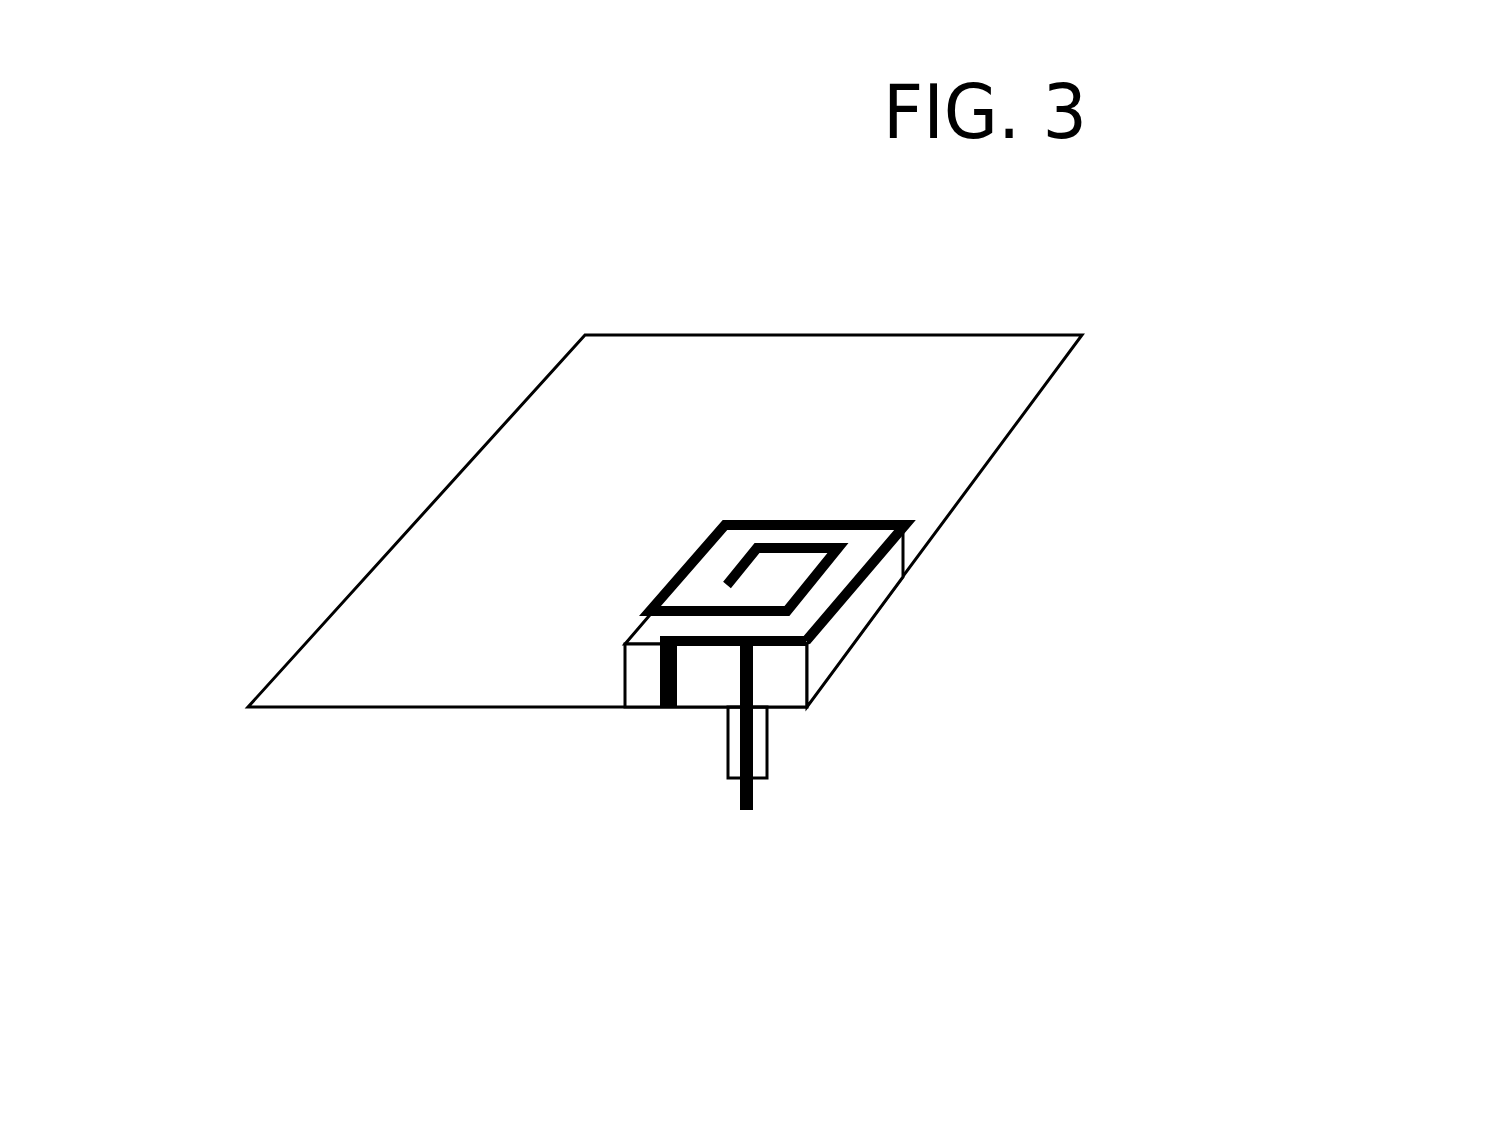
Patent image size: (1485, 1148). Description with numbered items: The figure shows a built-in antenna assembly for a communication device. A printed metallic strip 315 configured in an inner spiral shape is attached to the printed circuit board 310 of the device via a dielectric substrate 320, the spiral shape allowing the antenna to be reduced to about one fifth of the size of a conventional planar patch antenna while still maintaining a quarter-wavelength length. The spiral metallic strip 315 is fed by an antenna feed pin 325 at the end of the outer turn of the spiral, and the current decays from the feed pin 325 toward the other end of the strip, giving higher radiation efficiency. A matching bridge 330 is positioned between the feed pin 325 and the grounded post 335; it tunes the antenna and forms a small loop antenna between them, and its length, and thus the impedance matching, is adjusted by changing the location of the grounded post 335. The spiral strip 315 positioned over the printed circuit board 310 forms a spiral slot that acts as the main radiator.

The printed circuit board 310 is at (475, 577).
The printed metallic strip 315 is at (827, 568).
The dielectric substrate 320 is at (867, 598).
The antenna feed pin 325 is at (757, 755).
The matching bridge 330 is at (717, 638).
The grounded post 335 is at (667, 708).